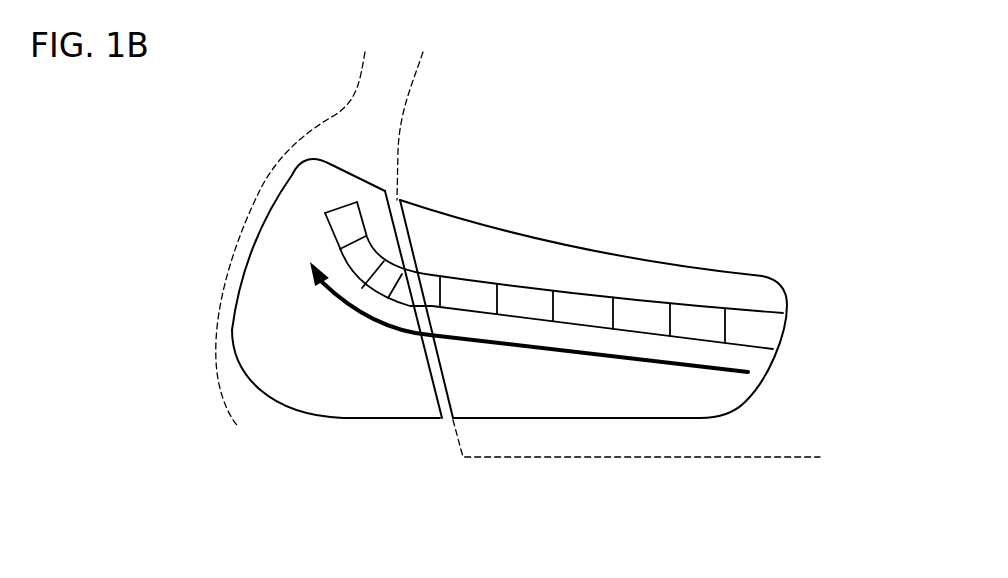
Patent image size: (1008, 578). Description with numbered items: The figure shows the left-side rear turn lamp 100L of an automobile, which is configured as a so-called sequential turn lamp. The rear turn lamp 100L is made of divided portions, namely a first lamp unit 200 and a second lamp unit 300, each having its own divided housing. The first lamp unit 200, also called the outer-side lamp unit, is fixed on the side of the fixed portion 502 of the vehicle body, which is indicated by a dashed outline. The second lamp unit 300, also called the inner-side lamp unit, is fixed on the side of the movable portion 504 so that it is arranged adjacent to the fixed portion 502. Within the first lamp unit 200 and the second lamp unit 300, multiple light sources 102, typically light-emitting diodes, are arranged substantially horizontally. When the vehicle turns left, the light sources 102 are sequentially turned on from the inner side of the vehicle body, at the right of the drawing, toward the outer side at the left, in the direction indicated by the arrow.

The left-side rear turn lamp 100L is at (892, 123).
The light sources 102 is at (460, 297).
The first lamp unit 200 is at (357, 418).
The second lamp unit 300 is at (583, 395).
The fixed portion 502 is at (337, 130).
The movable portion 504 is at (777, 432).